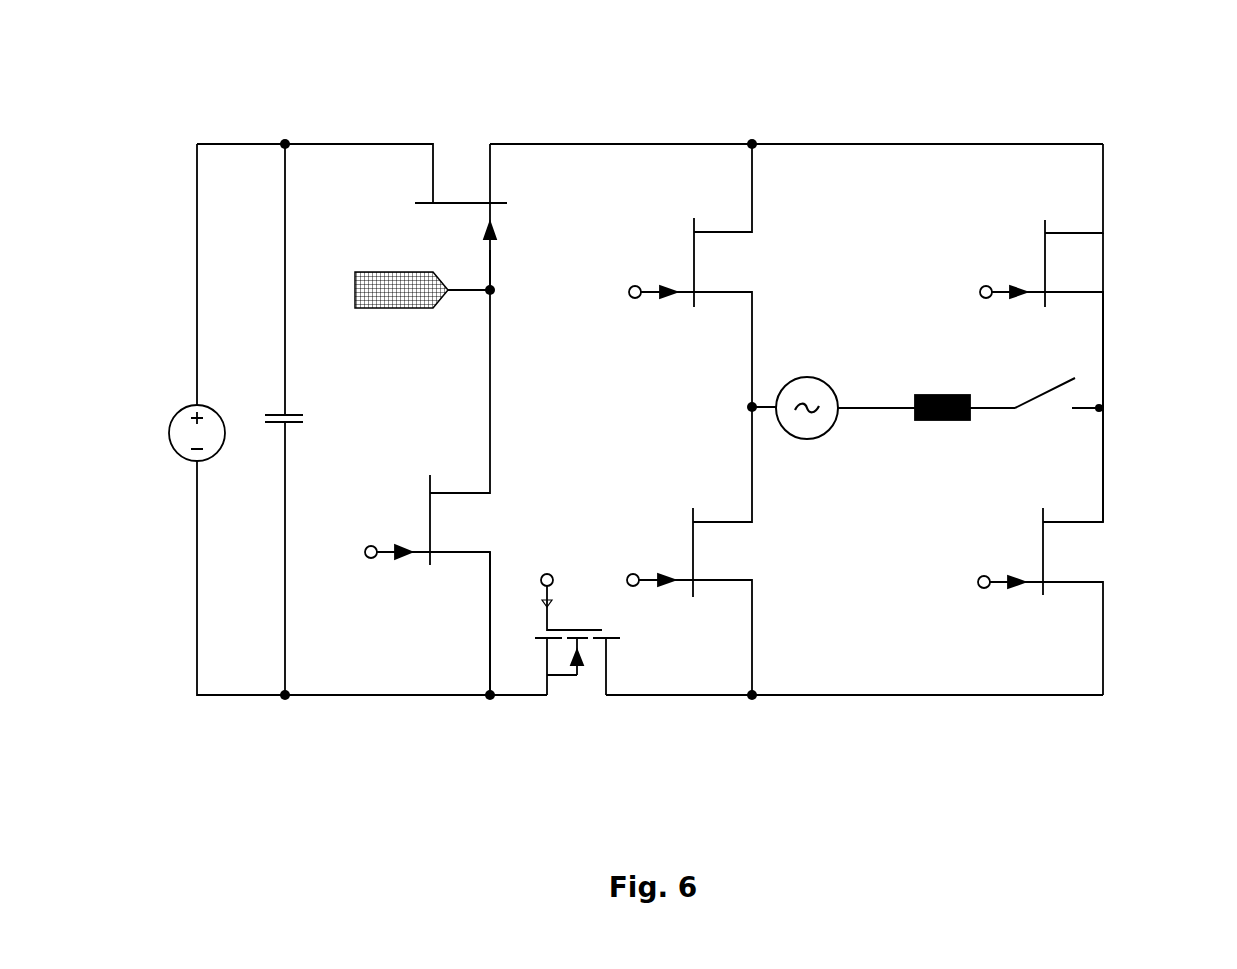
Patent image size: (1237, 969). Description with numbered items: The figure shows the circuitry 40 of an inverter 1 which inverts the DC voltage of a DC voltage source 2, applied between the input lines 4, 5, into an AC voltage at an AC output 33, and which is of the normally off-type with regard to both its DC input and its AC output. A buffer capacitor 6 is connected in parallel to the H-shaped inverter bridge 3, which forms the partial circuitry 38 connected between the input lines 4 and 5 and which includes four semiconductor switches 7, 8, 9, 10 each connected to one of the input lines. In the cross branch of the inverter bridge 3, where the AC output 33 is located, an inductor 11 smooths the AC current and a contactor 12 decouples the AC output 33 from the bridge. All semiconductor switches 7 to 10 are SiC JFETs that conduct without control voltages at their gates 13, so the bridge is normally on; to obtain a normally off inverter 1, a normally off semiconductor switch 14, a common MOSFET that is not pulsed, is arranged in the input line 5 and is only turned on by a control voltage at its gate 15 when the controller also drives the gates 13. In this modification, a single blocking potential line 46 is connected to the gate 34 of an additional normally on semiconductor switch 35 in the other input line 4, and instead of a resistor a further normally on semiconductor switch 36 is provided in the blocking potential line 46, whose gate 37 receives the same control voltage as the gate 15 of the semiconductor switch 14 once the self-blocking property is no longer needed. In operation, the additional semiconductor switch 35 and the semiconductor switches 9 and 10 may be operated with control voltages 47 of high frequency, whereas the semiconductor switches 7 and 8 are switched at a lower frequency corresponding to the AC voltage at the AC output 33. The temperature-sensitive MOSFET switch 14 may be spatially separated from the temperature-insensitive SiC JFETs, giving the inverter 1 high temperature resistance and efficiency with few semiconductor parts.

The inverter 1 is at (1134, 279).
The DC voltage source 2 is at (188, 462).
The inverter bridge 3 is at (1133, 428).
The input line 4 is at (900, 143).
The input line 5 is at (848, 697).
The buffer capacitor 6 is at (274, 425).
The semiconductor switch 7 is at (742, 262).
The semiconductor switch 8 is at (1086, 256).
The semiconductor switch 9 is at (748, 566).
The semiconductor switch 10 is at (1088, 562).
The inductor 11 is at (952, 424).
The contactor 12 is at (1055, 415).
The gate 13 is at (657, 287).
The normally off semiconductor switch 14 is at (581, 692).
The gate 15 is at (541, 588).
The AC output 33 is at (812, 443).
The gate 34 is at (492, 267).
The additional normally on semiconductor switch 35 is at (466, 182).
The further semiconductor switch 36 is at (474, 522).
The gate 37 is at (369, 560).
The partial circuitry 38 is at (1133, 353).
The circuitry 40 is at (1162, 180).
The blocking potential line 46 is at (489, 603).
The control voltages 47 is at (369, 272).